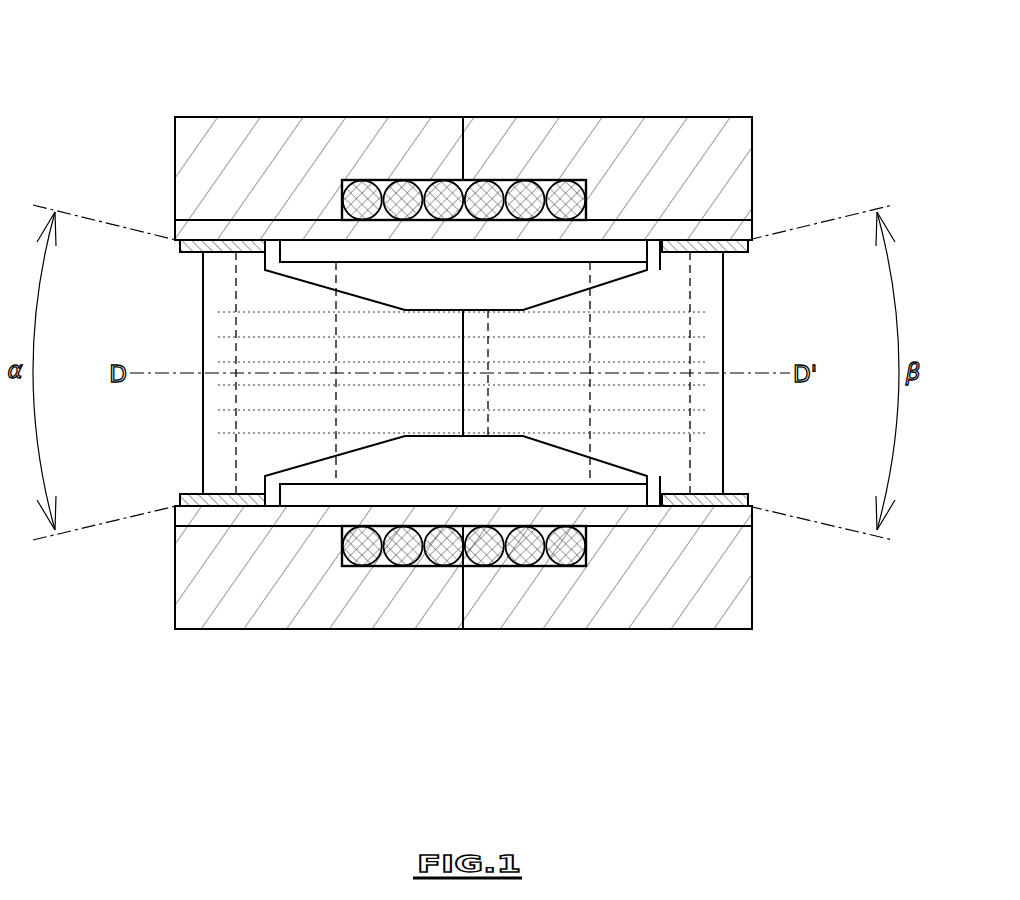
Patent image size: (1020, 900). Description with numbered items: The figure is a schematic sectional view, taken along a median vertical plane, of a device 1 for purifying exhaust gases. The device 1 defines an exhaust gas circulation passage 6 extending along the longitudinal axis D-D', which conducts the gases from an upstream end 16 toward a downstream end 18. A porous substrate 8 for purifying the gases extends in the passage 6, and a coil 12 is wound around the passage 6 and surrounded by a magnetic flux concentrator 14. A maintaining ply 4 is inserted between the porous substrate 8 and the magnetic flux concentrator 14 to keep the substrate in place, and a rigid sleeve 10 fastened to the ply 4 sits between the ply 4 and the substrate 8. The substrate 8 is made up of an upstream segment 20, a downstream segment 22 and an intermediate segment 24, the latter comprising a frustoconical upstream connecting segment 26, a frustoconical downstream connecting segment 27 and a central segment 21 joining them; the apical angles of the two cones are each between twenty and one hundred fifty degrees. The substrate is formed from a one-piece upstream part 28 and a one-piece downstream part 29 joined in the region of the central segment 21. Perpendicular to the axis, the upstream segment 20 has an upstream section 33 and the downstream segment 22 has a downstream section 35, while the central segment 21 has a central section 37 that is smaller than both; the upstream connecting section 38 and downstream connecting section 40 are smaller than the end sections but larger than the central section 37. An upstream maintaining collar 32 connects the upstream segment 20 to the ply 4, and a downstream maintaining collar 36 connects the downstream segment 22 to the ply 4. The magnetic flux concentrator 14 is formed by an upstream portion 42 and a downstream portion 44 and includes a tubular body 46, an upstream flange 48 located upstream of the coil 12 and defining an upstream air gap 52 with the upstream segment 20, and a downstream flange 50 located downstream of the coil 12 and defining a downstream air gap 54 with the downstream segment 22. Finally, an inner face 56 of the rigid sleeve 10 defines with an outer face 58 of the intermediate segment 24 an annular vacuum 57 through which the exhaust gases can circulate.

The device for purifying exhaust gases 1 is at (795, 62).
The maintaining ply 4 is at (742, 230).
The exhaust gas circulation passage 6 is at (145, 296).
The porous substrate 8 is at (732, 326).
The rigid sleeve 10 is at (640, 447).
The coil 12 is at (560, 197).
The magnetic flux concentrator 14 is at (592, 136).
The upstream end 16 is at (155, 432).
The downstream end 18 is at (747, 398).
The upstream segment 20 is at (207, 519).
The central segment 21 is at (438, 327).
The downstream segment 22 is at (742, 515).
The intermediate segment 24 is at (413, 260).
The upstream connecting segment 26 is at (316, 302).
The downstream connecting segment 27 is at (613, 302).
The one-piece upstream part 28 is at (295, 440).
The one-piece downstream part 29 is at (575, 423).
The upstream maintaining collar 32 is at (180, 244).
The upstream section 33 is at (222, 353).
The downstream section 35 is at (692, 418).
The downstream maintaining collar 36 is at (745, 498).
The central section 37 is at (488, 422).
The upstream connecting section 38 is at (337, 328).
The downstream connecting section 40 is at (588, 348).
The upstream portion 42 is at (308, 112).
The downstream portion 44 is at (718, 113).
The tubular body 46 is at (497, 135).
The upstream flange 48 is at (232, 160).
The downstream flange 50 is at (730, 158).
The upstream air gap 52 is at (212, 228).
The downstream air gap 54 is at (690, 228).
The inner face 56 is at (370, 463).
The annular vacuum 57 is at (473, 462).
The outer face 58 is at (413, 459).